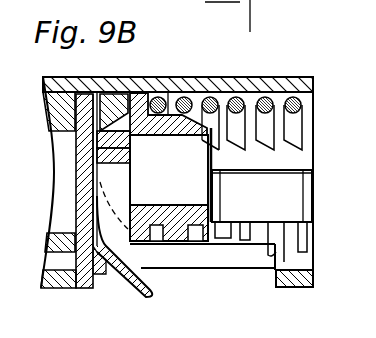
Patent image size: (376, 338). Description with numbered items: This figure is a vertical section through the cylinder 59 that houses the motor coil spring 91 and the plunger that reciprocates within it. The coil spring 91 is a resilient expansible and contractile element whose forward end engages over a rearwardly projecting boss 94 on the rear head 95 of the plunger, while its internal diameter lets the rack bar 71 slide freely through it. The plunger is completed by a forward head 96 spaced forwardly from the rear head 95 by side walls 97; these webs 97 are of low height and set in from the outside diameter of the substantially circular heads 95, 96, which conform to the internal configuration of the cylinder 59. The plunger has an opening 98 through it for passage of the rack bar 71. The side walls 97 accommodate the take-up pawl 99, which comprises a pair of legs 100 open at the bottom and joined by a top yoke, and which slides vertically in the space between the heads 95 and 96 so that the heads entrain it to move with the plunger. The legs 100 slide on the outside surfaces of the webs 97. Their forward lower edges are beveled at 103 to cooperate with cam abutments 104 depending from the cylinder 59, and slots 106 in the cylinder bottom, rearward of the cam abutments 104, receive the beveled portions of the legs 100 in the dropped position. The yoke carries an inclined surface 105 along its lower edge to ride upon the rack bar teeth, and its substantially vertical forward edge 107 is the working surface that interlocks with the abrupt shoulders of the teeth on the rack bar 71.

The cylinder 59 is at (220, 66).
The rack bar 71 is at (310, 203).
The motor coil spring 91 is at (266, 100).
The rearwardly projecting boss 94 is at (206, 220).
The rear head 95 is at (147, 100).
The forward head 96 is at (90, 97).
The side walls 97 is at (100, 149).
The opening 98 is at (196, 197).
The take-up pawl 99 is at (110, 100).
The legs 100 is at (118, 190).
The beveled forward lower edges 103 is at (108, 243).
The cam abutments 104 is at (150, 274).
The inclined surface 105 is at (128, 136).
The slots 106 is at (250, 256).
The substantially vertical forward edge 107 is at (78, 137).